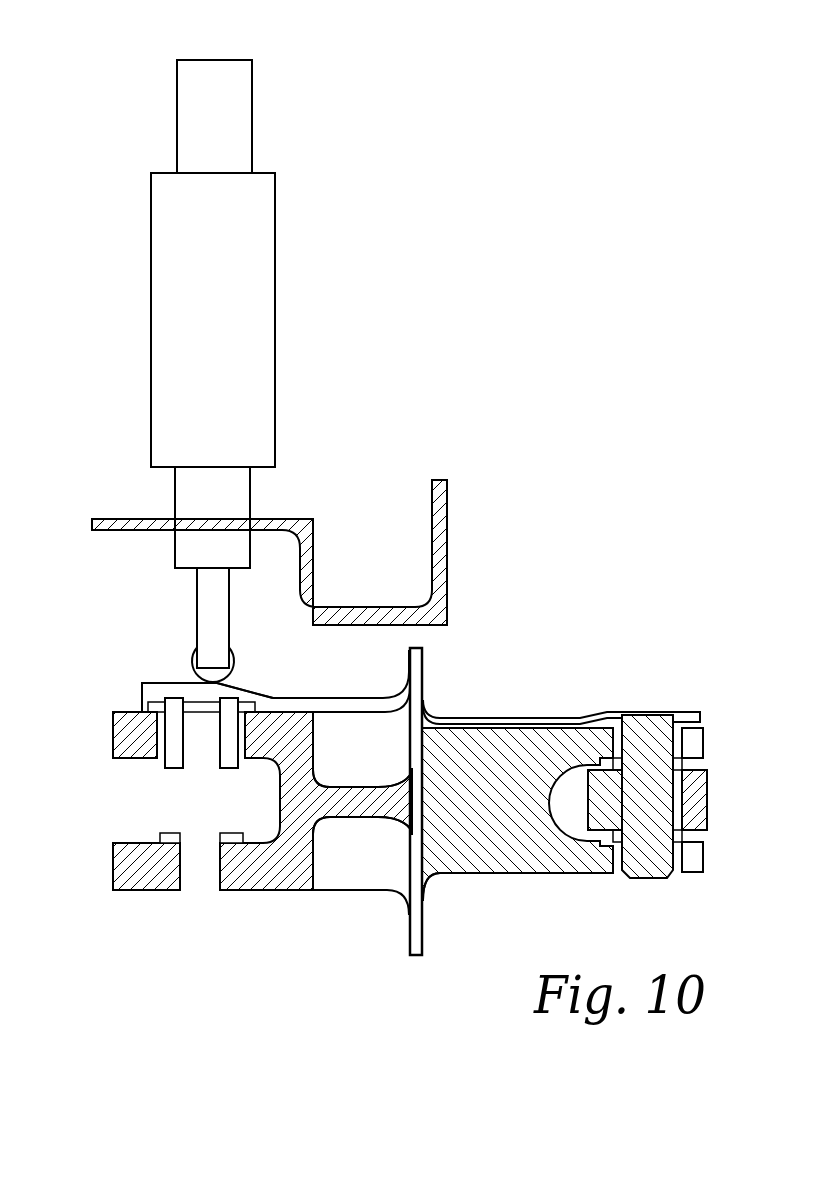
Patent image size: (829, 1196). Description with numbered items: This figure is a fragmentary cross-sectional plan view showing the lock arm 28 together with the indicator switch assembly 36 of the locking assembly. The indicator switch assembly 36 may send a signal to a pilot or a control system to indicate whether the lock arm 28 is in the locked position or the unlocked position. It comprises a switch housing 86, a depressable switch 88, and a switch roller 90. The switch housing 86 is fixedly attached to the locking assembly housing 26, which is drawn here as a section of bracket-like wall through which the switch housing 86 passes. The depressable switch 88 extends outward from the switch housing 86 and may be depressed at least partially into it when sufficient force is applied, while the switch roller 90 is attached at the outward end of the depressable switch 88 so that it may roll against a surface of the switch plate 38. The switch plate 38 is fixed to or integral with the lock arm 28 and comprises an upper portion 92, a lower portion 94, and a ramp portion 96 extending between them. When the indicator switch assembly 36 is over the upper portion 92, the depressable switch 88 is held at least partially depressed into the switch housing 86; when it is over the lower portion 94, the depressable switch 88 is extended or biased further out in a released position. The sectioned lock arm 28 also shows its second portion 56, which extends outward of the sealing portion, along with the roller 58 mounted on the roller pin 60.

The indicator switch assembly 36 is at (85, 89).
The switch housing 86 is at (175, 494).
The locking assembly housing 26 is at (290, 518).
The depressable switch 88 is at (197, 600).
The switch roller 90 is at (192, 662).
The upper portion 92 is at (176, 683).
The ramp portion 96 is at (255, 700).
The lower portion 94 is at (334, 697).
The lock arm 28 is at (260, 877).
The switch plate 38 is at (361, 745).
The second portion 56 is at (528, 745).
The roller pin 60 is at (648, 728).
The roller 58 is at (697, 803).